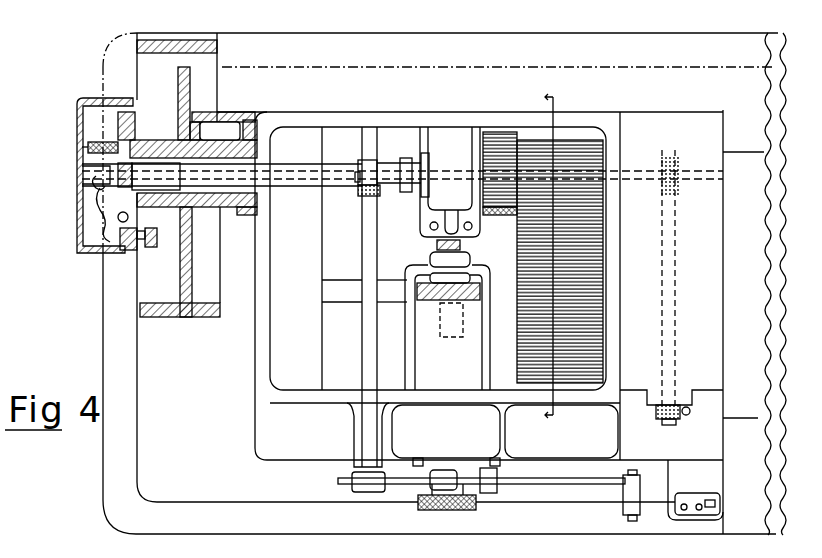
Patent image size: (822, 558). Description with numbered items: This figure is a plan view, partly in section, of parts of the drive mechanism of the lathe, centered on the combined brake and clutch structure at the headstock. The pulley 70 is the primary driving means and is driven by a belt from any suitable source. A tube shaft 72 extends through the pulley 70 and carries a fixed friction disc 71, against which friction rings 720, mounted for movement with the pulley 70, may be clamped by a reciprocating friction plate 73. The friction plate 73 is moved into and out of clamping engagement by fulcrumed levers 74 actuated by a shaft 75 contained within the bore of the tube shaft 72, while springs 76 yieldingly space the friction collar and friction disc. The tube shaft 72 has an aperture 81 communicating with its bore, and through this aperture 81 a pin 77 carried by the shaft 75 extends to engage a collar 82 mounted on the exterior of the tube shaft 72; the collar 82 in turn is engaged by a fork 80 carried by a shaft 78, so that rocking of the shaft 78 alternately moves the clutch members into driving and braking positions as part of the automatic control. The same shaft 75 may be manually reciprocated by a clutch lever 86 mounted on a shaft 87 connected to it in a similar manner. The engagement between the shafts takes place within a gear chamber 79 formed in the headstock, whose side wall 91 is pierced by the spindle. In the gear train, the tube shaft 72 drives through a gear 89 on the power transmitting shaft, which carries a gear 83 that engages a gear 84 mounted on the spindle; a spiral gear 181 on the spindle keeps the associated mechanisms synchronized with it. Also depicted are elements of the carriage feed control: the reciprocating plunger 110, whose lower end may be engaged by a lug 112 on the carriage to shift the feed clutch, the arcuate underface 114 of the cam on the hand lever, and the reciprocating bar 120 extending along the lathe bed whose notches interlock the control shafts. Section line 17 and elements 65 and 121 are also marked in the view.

The pulley 70 is at (212, 42).
The tube shaft 72 is at (282, 166).
The fork 80 is at (358, 188).
The aperture 81 is at (356, 175).
The shaft 78 is at (357, 160).
The pin 77 is at (372, 182).
The collar 82 is at (372, 185).
The spiral gear 181 is at (478, 165).
The gear 89 is at (503, 293).
The bearing flange 65 is at (530, 160).
The gear 83 is at (573, 167).
The gear 84 is at (593, 267).
The springs 76 is at (93, 144).
The shaft 75 is at (107, 176).
The fulcrumed levers 74 is at (107, 213).
The friction disc 71 is at (130, 247).
The friction rings 720 is at (140, 238).
The friction plate 73 is at (133, 262).
The side wall 91 is at (348, 340).
The gear chamber 79 is at (320, 347).
The section line 17 is at (556, 260).
The shaft 87 is at (668, 422).
The clutch lever 86 is at (690, 417).
The sleeve 121 is at (348, 480).
The reciprocating plunger 110 is at (485, 518).
The lug 112 is at (434, 514).
The arcuate underface 114 is at (448, 521).
The reciprocating bar 120 is at (560, 513).